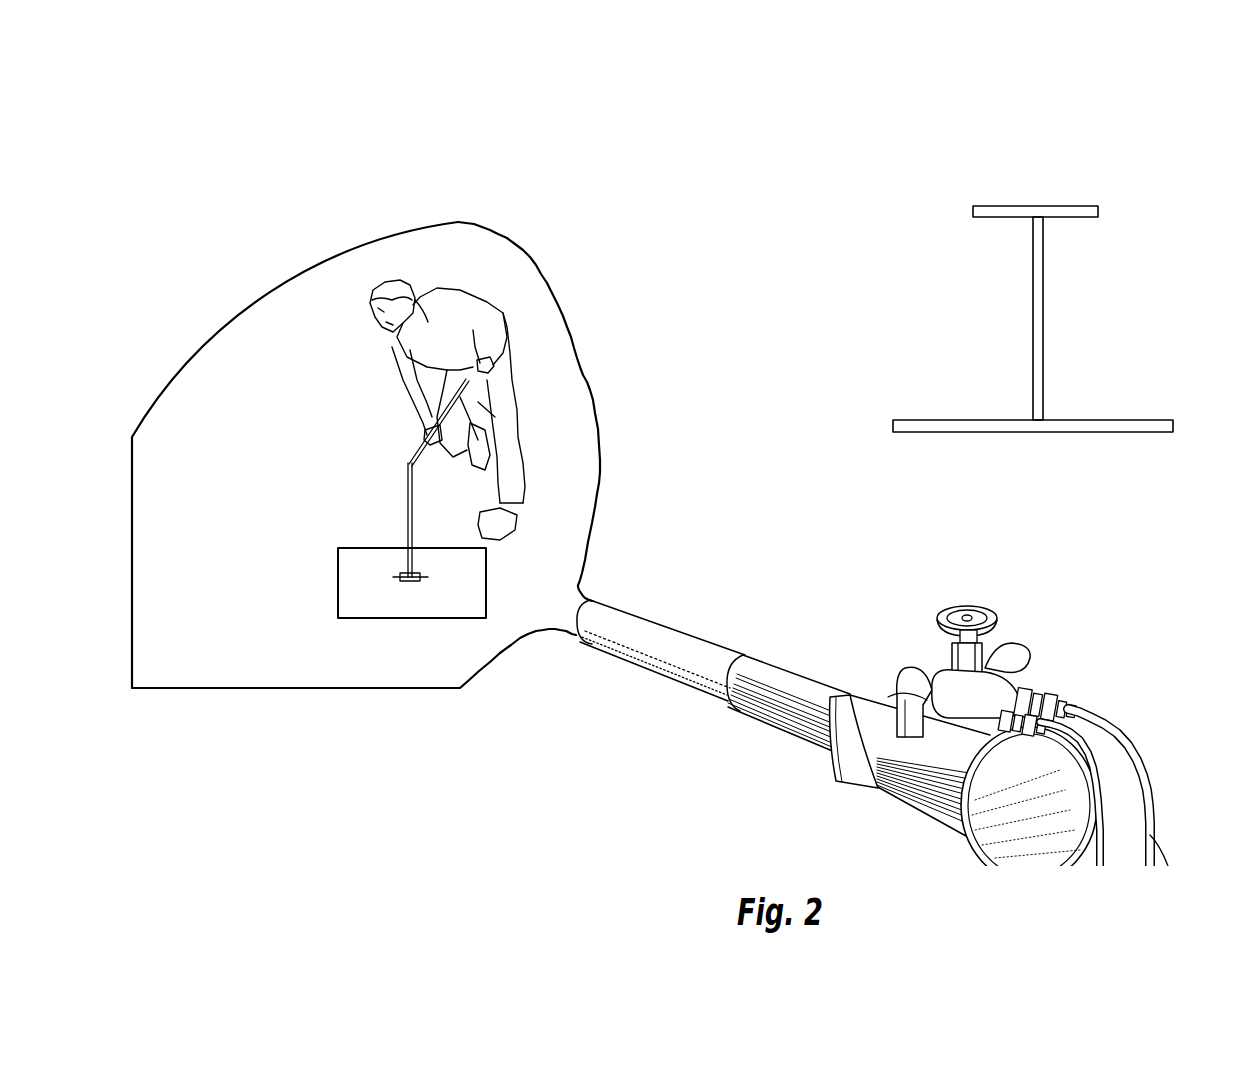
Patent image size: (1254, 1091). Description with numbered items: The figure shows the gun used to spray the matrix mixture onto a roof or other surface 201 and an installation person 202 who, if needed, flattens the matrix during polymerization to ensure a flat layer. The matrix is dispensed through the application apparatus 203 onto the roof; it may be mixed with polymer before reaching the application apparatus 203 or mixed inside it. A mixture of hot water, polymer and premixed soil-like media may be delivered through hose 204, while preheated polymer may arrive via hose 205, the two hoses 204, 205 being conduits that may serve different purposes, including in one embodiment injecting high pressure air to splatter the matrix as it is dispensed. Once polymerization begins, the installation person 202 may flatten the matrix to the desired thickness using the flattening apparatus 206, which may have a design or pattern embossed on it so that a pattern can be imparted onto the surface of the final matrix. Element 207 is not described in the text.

The roof or other surface 201 is at (217, 203).
The installation person 202 is at (582, 371).
The application apparatus 203 is at (627, 627).
The hose 204 is at (1102, 791).
The hose 205 is at (1154, 799).
The flattening apparatus 206 is at (1034, 207).
The drilling tool 207 is at (416, 498).